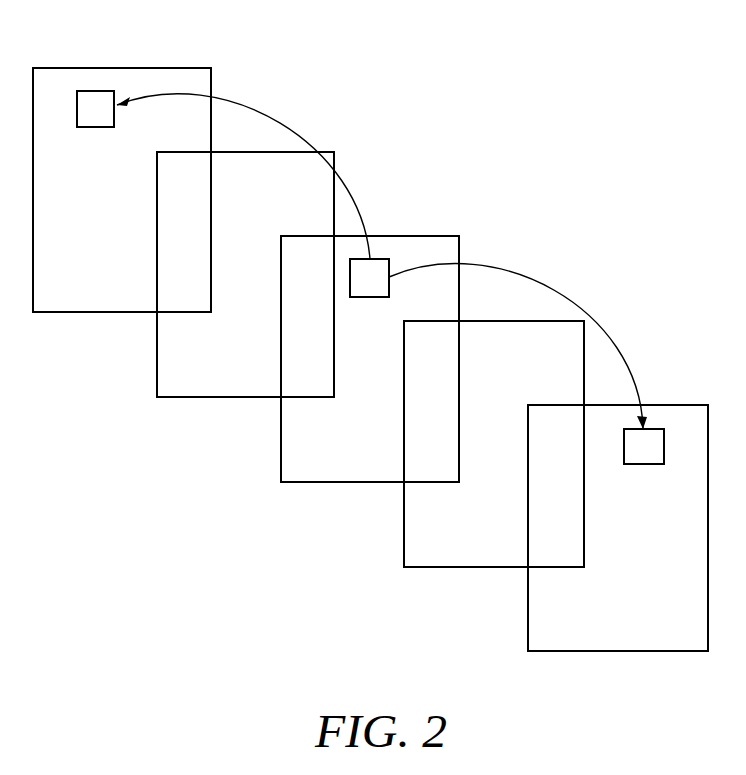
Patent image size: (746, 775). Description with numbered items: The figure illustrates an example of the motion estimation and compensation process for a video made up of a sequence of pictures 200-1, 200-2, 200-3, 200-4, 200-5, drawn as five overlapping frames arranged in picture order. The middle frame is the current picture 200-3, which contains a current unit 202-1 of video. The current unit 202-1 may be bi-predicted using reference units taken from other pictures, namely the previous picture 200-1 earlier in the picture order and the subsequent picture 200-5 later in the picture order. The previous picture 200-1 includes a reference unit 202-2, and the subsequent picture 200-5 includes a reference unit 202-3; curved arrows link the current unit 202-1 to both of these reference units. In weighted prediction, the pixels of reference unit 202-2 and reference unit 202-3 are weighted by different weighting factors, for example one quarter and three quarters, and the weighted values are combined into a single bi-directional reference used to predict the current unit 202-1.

The previous picture 200-1 is at (97, 312).
The picture 200-2 is at (220, 397).
The current picture 200-3 is at (344, 482).
The picture 200-4 is at (469, 567).
The subsequent picture 200-5 is at (618, 651).
The current unit 202-1 is at (382, 259).
The reference unit 202-2 is at (95, 91).
The reference unit 202-3 is at (655, 429).